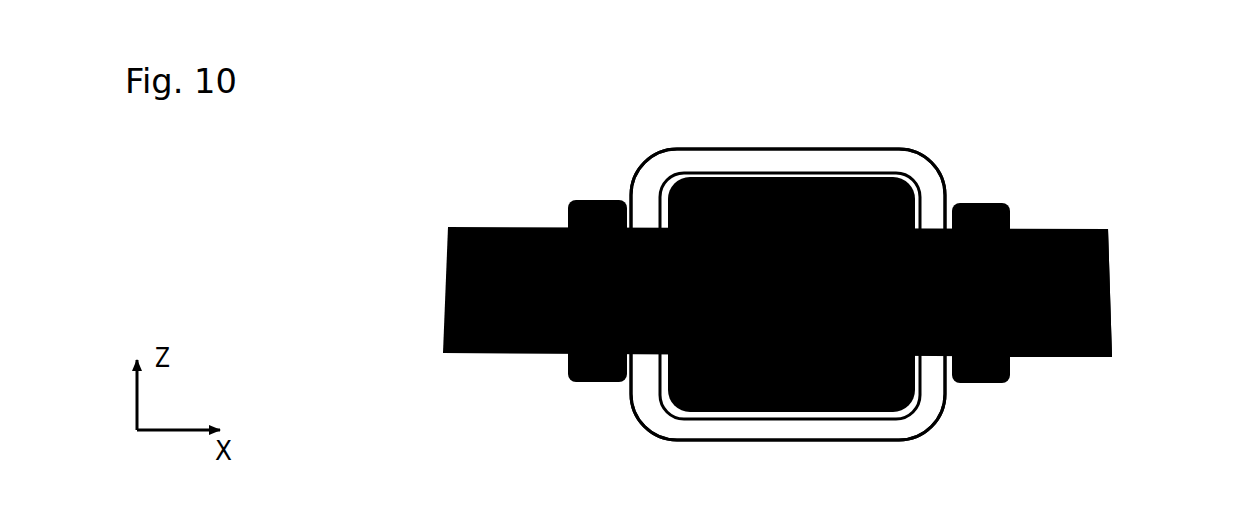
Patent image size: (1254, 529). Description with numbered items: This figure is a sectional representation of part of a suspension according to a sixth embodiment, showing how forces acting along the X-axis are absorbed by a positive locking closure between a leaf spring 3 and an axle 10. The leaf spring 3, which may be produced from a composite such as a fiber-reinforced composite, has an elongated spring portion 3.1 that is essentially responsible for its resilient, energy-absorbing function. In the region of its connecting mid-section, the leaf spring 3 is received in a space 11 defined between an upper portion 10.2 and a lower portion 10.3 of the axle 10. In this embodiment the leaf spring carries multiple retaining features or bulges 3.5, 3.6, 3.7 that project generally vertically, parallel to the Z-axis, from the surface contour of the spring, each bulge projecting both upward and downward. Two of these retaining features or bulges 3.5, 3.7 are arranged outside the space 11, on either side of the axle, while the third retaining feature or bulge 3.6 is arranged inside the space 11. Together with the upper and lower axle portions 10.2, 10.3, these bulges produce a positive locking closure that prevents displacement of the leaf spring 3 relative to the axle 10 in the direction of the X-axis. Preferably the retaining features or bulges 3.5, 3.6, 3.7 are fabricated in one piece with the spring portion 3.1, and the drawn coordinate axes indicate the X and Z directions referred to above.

The leaf spring 3 is at (495, 353).
The spring portion 3.1 is at (1108, 230).
The retaining feature or bulge 3.5 is at (567, 213).
The retaining feature or bulge 3.6 is at (783, 173).
The retaining feature or bulge 3.7 is at (1017, 212).
The axle 10 is at (657, 422).
The upper portion of the axle 10.2 is at (935, 167).
The lower portion of the axle 10.3 is at (920, 435).
The space 11 is at (670, 183).